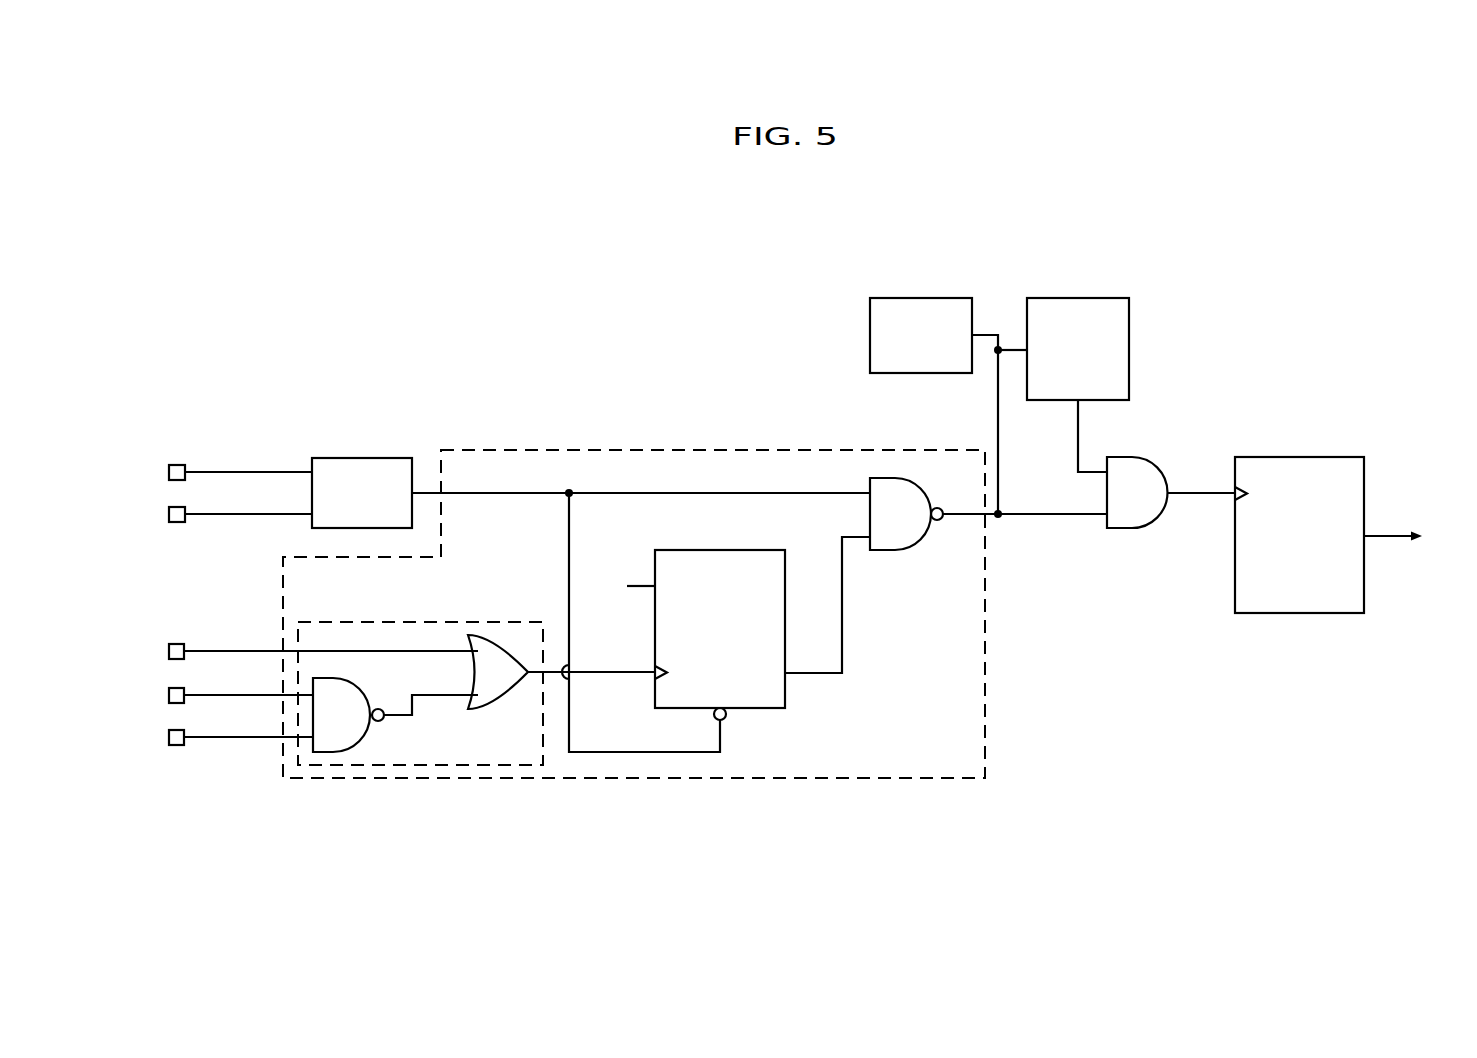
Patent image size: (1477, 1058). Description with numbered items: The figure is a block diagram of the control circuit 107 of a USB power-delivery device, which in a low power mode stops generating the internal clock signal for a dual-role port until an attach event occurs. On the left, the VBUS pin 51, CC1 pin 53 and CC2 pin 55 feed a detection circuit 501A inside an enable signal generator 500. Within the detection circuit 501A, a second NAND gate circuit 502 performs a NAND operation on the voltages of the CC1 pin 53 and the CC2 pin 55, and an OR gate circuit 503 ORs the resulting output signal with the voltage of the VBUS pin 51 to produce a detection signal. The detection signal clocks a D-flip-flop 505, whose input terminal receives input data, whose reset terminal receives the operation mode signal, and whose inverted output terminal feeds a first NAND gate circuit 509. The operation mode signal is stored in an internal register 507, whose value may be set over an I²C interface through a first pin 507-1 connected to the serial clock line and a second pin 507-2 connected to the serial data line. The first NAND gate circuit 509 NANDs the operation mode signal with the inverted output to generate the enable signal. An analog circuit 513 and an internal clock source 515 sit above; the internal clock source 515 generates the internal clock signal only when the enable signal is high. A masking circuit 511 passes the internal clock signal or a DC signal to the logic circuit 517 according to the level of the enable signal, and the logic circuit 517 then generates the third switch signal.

The control circuit 107 is at (1277, 261).
The enable signal generator 500 is at (720, 450).
The detection circuit 501A is at (447, 605).
The second NAND gate circuit 502 is at (372, 739).
The OR gate circuit 503 is at (504, 708).
The D-flip-flop 505 is at (720, 550).
The internal register 507 is at (363, 458).
The first pin 507-1 is at (203, 443).
The second pin 507-2 is at (178, 522).
The first NAND gate circuit 509 is at (898, 552).
The masking circuit 511 is at (1128, 530).
The analog circuit 513 is at (870, 335).
The internal clock source 515 is at (1129, 350).
The logic circuit 517 is at (1298, 457).
The VBUS pin 51 is at (172, 645).
The CC1 pin 53 is at (181, 688).
The CC2 pin 55 is at (178, 746).